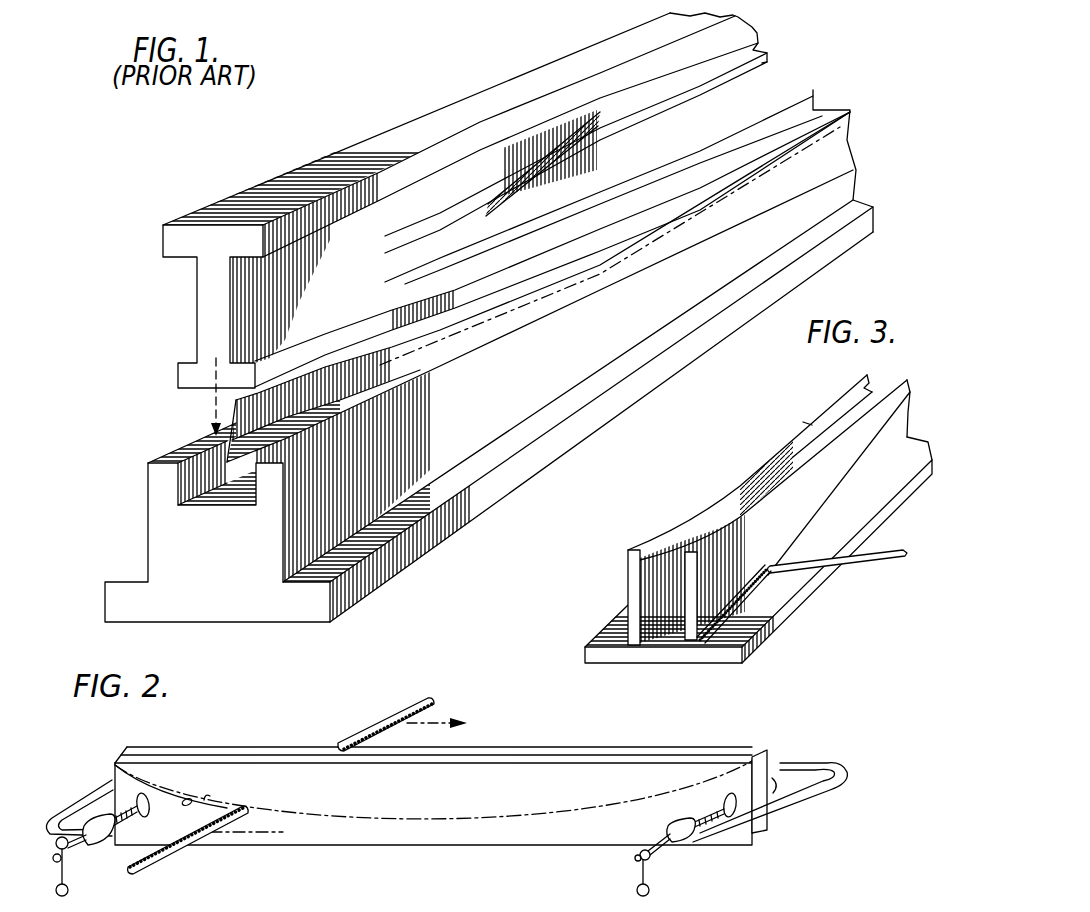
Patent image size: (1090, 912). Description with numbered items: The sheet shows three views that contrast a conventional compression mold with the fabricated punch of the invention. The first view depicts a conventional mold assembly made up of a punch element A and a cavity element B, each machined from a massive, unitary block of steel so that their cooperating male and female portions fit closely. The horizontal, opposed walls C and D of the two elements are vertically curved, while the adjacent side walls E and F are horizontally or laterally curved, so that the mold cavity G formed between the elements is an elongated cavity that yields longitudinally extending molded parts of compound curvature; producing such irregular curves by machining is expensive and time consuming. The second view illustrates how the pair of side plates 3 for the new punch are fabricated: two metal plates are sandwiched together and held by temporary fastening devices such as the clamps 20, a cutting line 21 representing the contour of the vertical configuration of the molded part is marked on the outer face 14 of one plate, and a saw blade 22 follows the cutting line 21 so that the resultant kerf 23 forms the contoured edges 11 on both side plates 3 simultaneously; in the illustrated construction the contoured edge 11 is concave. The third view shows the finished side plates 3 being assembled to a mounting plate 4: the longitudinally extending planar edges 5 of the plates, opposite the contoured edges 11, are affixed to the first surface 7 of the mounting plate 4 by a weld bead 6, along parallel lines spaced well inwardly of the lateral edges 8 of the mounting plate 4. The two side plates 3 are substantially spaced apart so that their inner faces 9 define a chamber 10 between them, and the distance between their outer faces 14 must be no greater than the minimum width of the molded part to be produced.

In FIG. 1, the punch element A is at (401, 112).
In FIG. 1, the cavity element B is at (150, 446).
In FIG. 1, the horizontal opposed wall C is at (190, 392).
In FIG. 1, the horizontal opposed wall D is at (237, 485).
In FIG. 1, the side wall E is at (463, 222).
In FIG. 1, the side wall F is at (458, 288).
In FIG. 1, the mold cavity G is at (824, 112).
In FIG. 3, the side plate 3 is at (680, 617).
In FIG. 2, the side plate 3 is at (767, 760).
In FIG. 3, the mounting plate 4 is at (578, 628).
In FIG. 2, the planar edge 5 is at (453, 845).
In FIG. 3, the weld bead 6 is at (773, 607).
In FIG. 3, the first surface 7 is at (903, 452).
In FIG. 3, the lateral edge 8 is at (860, 530).
In FIG. 3, the inner face 9 is at (887, 382).
In FIG. 3, the chamber 10 is at (780, 487).
In FIG. 3, the contoured edge 11 is at (747, 523).
In FIG. 2, the contoured edge 11 is at (173, 828).
In FIG. 3, the outer face 14 is at (850, 467).
In FIG. 2, the outer face 14 is at (592, 827).
In FIG. 2, the clamp 20 is at (80, 805).
In FIG. 2, the cutting line 21 is at (490, 817).
In FIG. 2, the saw blade 22 is at (382, 722).
In FIG. 2, the kerf 23 is at (172, 826).